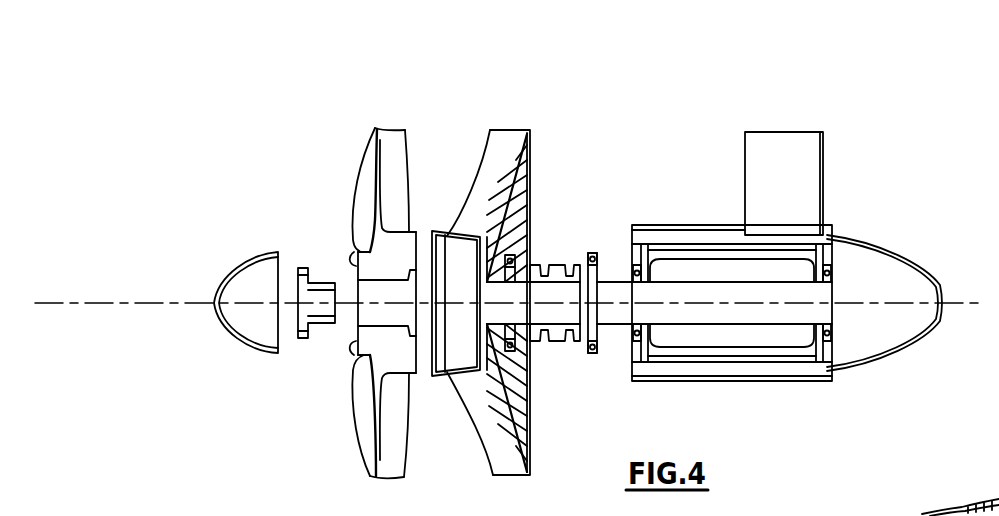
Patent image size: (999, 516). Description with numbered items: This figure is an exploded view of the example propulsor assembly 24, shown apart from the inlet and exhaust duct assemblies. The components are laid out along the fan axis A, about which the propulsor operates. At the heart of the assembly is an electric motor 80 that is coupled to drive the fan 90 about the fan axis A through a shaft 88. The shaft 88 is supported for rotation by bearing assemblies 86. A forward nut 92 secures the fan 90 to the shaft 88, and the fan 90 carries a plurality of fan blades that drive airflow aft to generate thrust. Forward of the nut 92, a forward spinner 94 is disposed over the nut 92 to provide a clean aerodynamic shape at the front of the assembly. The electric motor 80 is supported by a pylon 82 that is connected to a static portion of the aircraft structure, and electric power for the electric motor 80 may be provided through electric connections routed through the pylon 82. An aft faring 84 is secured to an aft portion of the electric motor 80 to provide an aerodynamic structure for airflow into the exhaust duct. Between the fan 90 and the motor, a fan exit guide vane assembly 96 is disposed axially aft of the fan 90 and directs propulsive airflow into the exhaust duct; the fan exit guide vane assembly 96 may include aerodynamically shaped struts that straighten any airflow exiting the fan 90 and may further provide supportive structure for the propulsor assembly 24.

The propulsor assembly 24 is at (812, 88).
The electric motor 80 is at (745, 252).
The pylon 82 is at (800, 188).
The aft faring 84 is at (918, 290).
The bearing assemblies 86 is at (542, 243).
The shaft 88 is at (556, 333).
The fan 90 is at (390, 465).
The forward nut 92 is at (300, 246).
The forward spinner 94 is at (243, 278).
The fan exit guide vane assembly 96 is at (510, 462).
The fan axis A is at (112, 303).